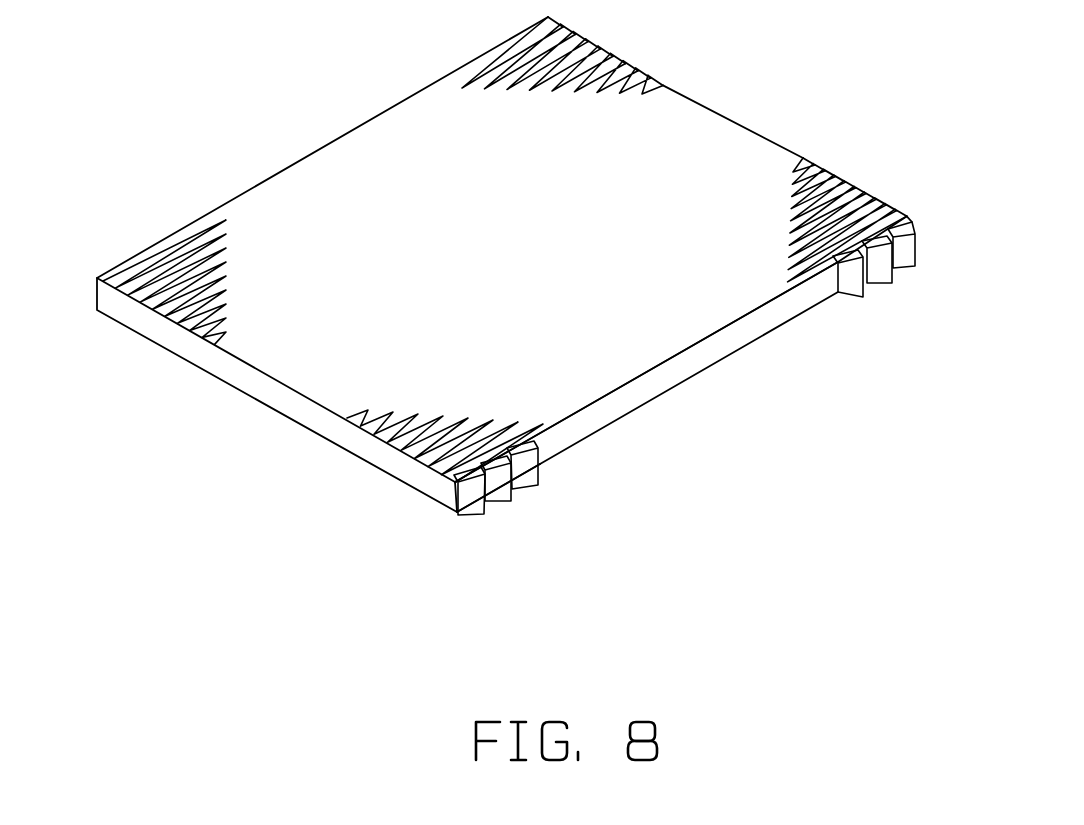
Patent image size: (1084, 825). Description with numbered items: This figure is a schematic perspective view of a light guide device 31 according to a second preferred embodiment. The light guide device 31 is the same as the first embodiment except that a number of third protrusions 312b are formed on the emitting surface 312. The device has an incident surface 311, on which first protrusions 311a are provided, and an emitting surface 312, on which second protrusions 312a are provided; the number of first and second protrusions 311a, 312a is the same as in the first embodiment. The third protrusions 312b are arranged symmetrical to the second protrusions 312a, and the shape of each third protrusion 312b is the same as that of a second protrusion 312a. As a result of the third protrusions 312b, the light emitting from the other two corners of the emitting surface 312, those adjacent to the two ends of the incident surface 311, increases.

The light guide device 31 is at (343, 93).
The incident surface 311 is at (570, 437).
The first protrusions 311a is at (502, 487).
The emitting surface 312 is at (657, 165).
The second protrusions 312a is at (425, 462).
The third protrusions 312b is at (142, 300).